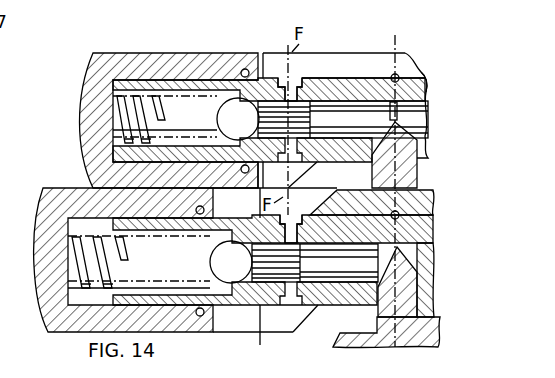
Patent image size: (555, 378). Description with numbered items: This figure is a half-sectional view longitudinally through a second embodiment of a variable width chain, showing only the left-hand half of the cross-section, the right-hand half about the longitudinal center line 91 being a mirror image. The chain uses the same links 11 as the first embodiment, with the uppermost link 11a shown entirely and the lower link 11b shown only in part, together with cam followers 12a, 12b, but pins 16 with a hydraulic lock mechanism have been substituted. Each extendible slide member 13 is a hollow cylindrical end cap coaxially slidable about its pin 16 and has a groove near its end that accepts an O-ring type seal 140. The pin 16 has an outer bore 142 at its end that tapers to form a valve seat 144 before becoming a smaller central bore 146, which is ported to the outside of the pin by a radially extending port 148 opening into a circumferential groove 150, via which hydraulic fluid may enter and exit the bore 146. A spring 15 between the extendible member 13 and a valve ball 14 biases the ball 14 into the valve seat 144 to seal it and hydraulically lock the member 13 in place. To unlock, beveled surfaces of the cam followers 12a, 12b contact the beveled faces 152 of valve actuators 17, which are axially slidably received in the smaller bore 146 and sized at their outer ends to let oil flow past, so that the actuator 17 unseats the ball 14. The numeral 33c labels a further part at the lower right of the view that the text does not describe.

The link 11 is at (263, 60).
The upper link 11a is at (410, 60).
The lower link 11b is at (428, 202).
The cam follower 12a is at (410, 168).
The cam follower 12b is at (407, 290).
The extendible slide member 13 is at (86, 137).
The valve ball 14 is at (219, 112).
The spring 15 is at (127, 97).
The pin 16 is at (152, 79).
The valve actuator 17 is at (303, 140).
The base plate 33c is at (413, 323).
The longitudinal center line 91 is at (421, 68).
The O-ring type seal 140 is at (213, 314).
The outer bore 142 is at (132, 98).
The valve seat 144 is at (265, 80).
The central bore 146 is at (291, 215).
The radially extending port 148 is at (314, 86).
The circumferential groove 150 is at (292, 100).
The beveled face 152 is at (420, 123).